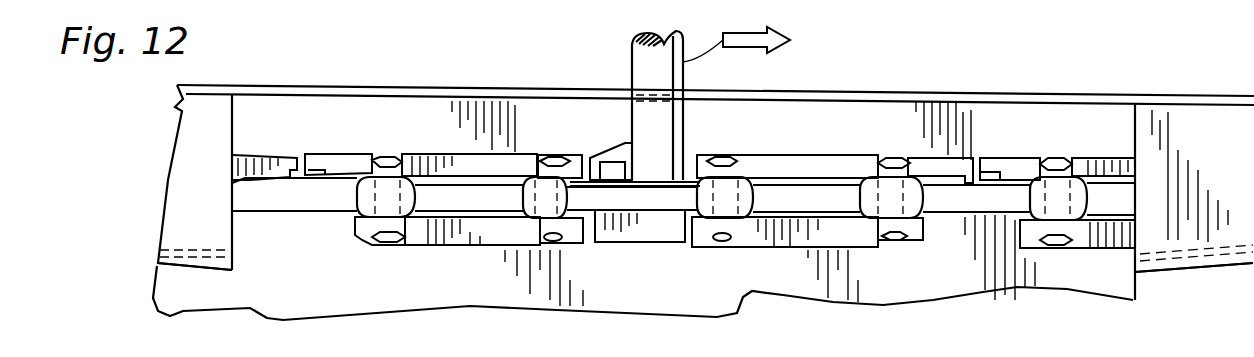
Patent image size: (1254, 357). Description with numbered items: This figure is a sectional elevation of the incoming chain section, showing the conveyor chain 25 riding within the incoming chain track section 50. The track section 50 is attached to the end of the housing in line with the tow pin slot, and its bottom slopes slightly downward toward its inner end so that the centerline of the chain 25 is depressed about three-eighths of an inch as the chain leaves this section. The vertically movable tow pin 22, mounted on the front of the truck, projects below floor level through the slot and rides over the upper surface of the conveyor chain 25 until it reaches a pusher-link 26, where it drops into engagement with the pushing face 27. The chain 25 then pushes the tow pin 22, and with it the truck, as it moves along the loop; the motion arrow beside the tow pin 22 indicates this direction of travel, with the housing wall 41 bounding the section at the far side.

The tow pin 22 is at (632, 55).
The conveyor chain 25 is at (297, 212).
The pusher-link 26 is at (652, 243).
The pushing face 27 is at (637, 177).
The side wall 41 is at (1213, 268).
The incoming chain track section 50 is at (208, 270).